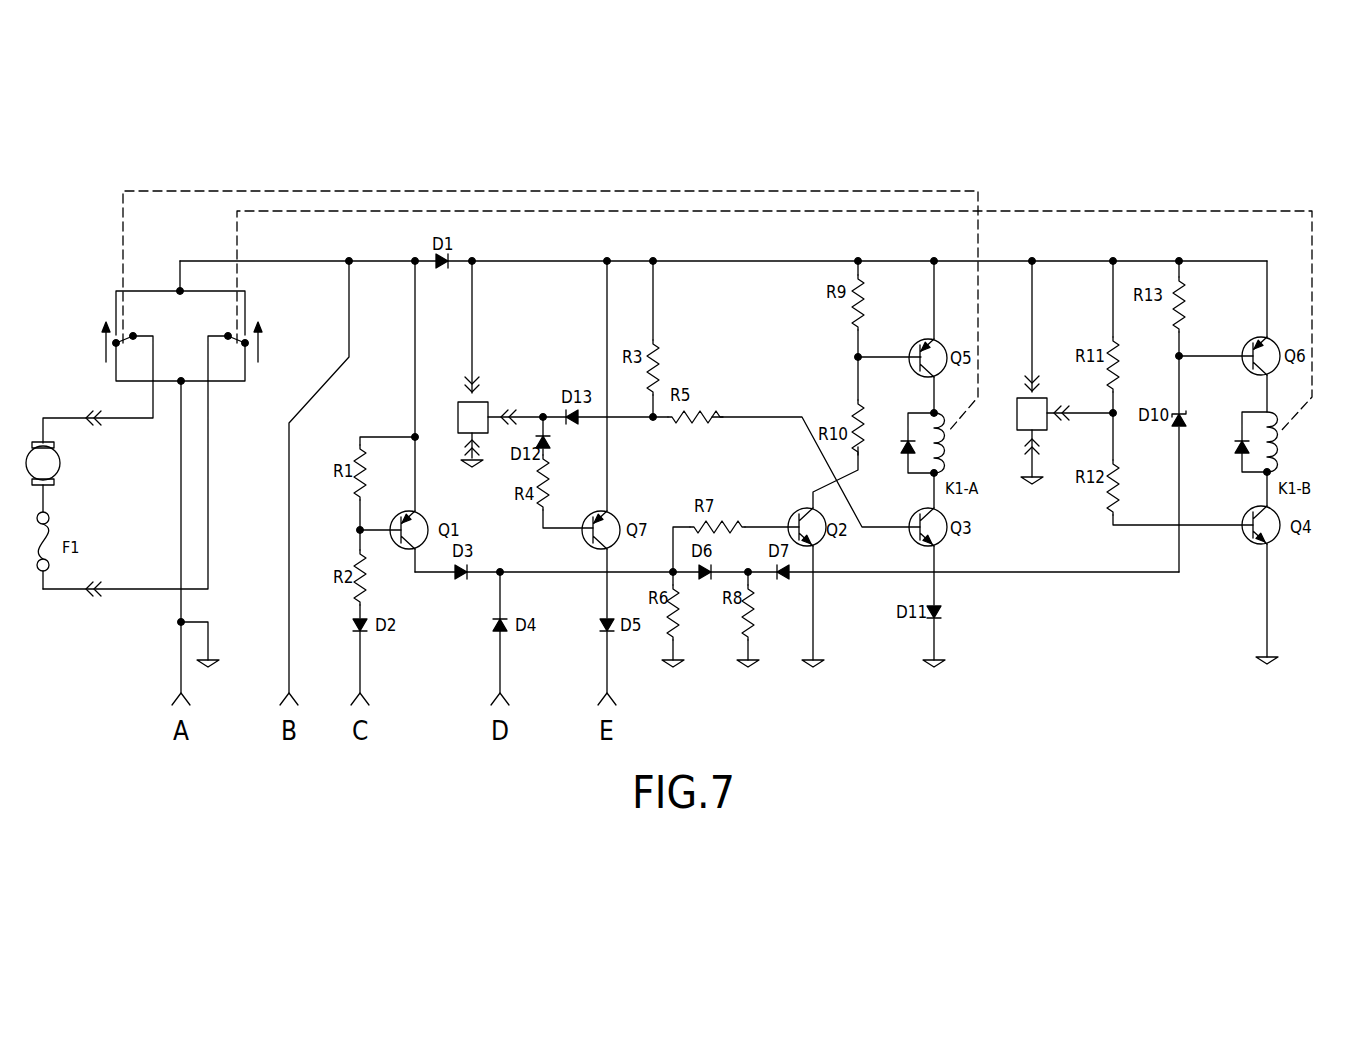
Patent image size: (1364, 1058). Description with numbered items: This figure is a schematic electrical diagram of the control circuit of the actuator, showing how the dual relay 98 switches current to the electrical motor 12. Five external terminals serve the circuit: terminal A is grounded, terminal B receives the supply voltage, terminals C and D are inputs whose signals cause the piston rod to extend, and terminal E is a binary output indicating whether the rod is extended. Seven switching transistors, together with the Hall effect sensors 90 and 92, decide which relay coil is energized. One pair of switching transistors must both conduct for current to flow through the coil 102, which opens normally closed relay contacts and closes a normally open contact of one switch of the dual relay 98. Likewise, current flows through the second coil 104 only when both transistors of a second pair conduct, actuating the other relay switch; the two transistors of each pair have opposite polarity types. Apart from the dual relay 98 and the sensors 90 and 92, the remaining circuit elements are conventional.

The dual relay 98 is at (116, 303).
The electrical motor 12 is at (61, 463).
The Hall effect sensor 90 is at (458, 413).
The Hall effect sensor 92 is at (1040, 397).
The coil 102 is at (945, 447).
The second coil 104 is at (1280, 446).